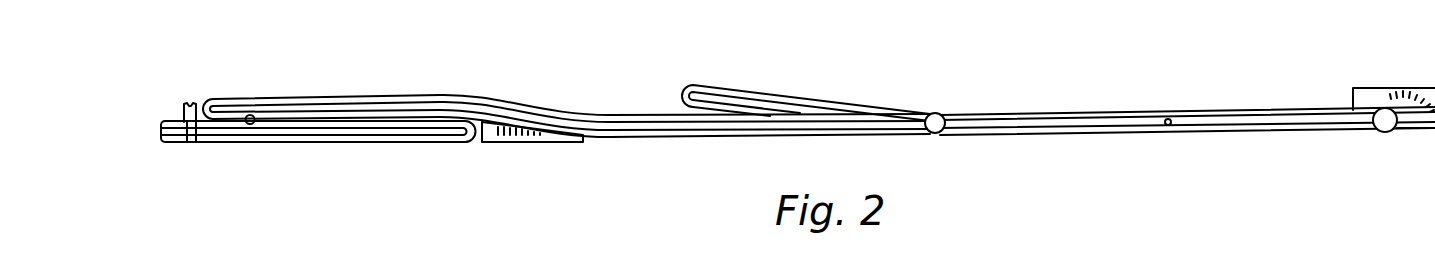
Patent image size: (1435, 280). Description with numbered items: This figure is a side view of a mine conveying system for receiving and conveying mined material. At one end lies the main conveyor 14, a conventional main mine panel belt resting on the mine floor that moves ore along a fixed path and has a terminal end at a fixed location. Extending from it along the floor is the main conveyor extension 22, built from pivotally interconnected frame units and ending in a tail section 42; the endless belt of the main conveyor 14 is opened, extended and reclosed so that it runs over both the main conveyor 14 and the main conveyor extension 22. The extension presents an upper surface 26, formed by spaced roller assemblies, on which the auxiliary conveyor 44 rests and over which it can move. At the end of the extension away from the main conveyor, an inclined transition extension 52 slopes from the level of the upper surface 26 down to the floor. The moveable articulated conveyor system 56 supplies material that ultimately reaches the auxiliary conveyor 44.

The main conveyor 14 is at (163, 120).
The main conveyor extension 22 is at (325, 143).
The upper surface 26 is at (260, 119).
The tail section 42 is at (188, 125).
The auxiliary conveyor 44 is at (343, 97).
The inclined transition extension 52 is at (518, 145).
The moveable articulated conveyor system 56 is at (1078, 73).